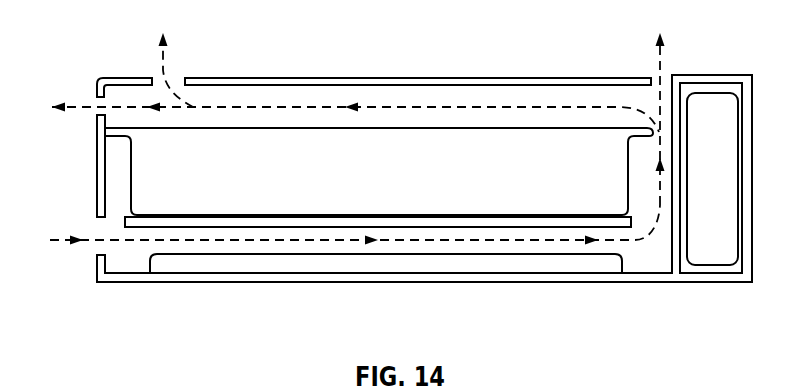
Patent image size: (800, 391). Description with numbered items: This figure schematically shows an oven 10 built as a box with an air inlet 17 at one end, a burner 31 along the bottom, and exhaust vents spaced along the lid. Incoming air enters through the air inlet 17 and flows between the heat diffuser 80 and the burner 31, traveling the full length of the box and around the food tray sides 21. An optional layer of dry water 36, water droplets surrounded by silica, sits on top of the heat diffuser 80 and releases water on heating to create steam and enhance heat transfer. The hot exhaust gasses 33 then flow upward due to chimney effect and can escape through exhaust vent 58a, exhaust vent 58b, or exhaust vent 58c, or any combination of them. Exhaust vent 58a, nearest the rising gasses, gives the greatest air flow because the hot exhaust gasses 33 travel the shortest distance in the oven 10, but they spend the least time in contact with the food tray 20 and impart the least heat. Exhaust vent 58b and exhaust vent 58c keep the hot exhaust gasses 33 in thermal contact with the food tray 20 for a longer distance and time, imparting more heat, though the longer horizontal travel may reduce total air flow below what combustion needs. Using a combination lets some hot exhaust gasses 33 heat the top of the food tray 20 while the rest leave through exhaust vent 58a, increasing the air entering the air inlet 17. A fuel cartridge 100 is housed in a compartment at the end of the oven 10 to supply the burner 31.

The oven 10 is at (442, 145).
The air inlet 17 is at (331, 260).
The food tray 20 is at (415, 138).
The food tray sides 21 is at (628, 188).
The burner 31 is at (528, 265).
The hot exhaust gasses 33 is at (637, 240).
The layer of dry water 36 is at (200, 213).
The exhaust vent 58a is at (681, 107).
The exhaust vent 58b is at (206, 70).
The exhaust vent 58c is at (336, 126).
The heat diffuser 80 is at (128, 212).
The fuel cartridge 100 is at (707, 255).